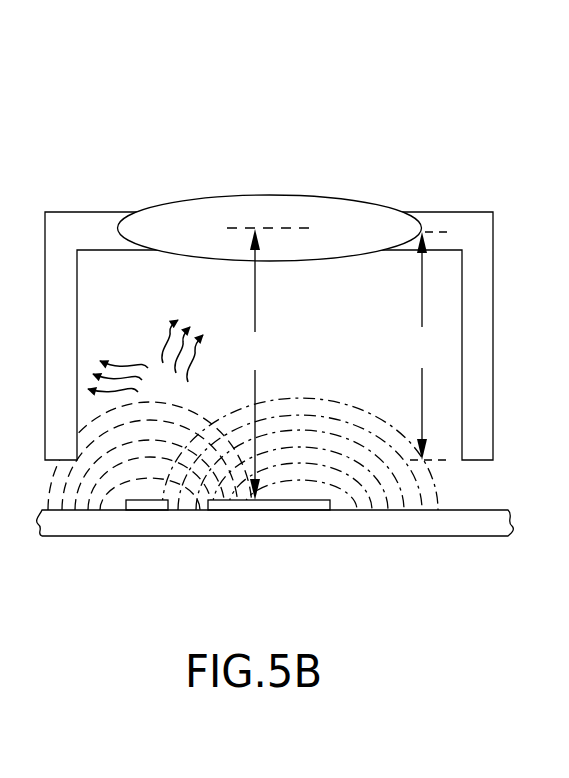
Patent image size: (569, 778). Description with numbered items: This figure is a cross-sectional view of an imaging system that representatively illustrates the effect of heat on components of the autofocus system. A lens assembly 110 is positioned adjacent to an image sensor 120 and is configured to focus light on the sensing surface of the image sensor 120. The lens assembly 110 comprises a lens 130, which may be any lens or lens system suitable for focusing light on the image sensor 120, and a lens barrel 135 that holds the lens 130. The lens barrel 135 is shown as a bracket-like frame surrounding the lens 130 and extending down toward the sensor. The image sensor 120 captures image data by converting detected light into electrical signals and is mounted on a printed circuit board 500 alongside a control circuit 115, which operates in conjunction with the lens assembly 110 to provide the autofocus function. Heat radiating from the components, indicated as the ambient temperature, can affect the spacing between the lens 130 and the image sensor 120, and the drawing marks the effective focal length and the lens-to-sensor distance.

The lens assembly 110 is at (292, 280).
The control circuit 115 is at (145, 508).
The image sensor 120 is at (255, 508).
The lens 130 is at (338, 210).
The lens barrel 135 is at (460, 218).
The printed circuit board 500 is at (460, 523).